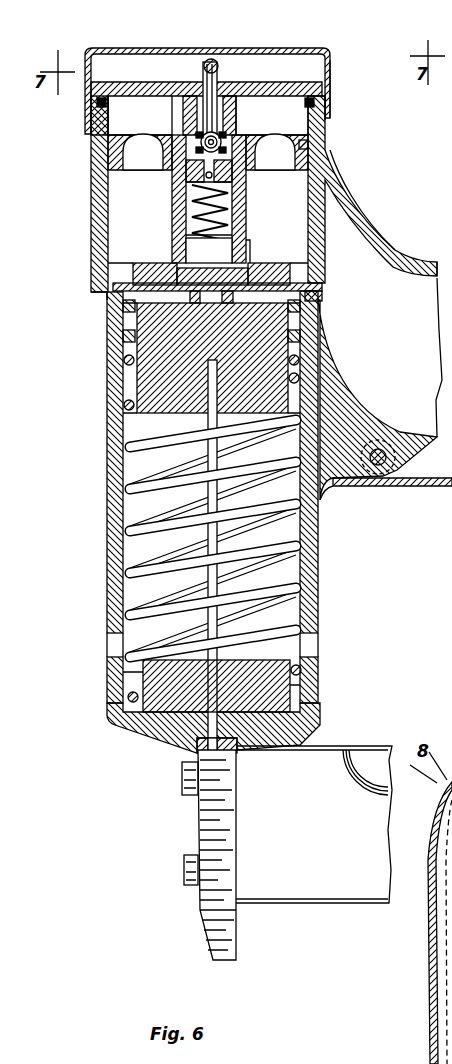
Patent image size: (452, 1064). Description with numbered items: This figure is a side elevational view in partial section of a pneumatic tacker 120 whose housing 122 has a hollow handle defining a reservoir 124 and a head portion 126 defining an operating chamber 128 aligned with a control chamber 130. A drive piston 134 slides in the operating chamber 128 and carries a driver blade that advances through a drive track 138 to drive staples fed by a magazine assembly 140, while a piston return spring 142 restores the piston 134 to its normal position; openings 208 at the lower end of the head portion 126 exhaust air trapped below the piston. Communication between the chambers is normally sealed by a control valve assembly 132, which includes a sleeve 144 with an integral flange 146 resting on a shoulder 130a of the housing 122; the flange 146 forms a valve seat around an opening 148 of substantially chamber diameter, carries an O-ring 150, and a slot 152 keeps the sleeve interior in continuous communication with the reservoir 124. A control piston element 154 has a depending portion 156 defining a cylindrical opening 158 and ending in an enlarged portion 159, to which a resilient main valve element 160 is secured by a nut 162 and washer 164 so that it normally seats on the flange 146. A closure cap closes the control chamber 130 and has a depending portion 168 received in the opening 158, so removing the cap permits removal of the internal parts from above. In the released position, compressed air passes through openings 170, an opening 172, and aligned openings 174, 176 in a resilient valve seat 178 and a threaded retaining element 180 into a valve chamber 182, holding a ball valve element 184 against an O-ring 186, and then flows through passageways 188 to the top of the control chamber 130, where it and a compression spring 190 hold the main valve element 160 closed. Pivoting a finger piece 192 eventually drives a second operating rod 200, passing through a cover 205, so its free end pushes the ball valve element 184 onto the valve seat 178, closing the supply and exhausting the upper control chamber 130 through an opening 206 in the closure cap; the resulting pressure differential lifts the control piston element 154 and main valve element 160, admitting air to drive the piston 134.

The pneumatic tacker 120 is at (382, 125).
The housing 122 is at (348, 200).
The reservoir 124 is at (400, 266).
The head portion 126 is at (318, 540).
The operating chamber 128 is at (124, 508).
The control chamber 130 is at (92, 210).
The shoulder 130a is at (100, 292).
The control valve assembly 132 is at (118, 190).
The drive piston 134 is at (140, 383).
The drive track 138 is at (202, 753).
The magazine assembly 140 is at (330, 746).
The piston return spring 142 is at (300, 604).
The sleeve 144 is at (95, 240).
The flange 146 is at (123, 306).
The opening 148 is at (123, 336).
The O-ring 150 is at (325, 303).
The slot 152 is at (322, 178).
The control piston element 154 is at (318, 122).
The depending portion 156 is at (172, 207).
The cylindrical opening 158 is at (238, 232).
The enlarged portion 159 is at (246, 250).
The main valve element 160 is at (285, 270).
The nut 162 is at (124, 358).
The washer 164 is at (320, 287).
The depending portion 168 is at (236, 108).
The openings 170 is at (186, 255).
The opening 172 is at (240, 196).
The opening 174 is at (186, 172).
The opening 176 is at (232, 172).
The resilient valve seat 178 is at (170, 165).
The retaining element 180 is at (187, 190).
The valve chamber 182 is at (248, 165).
The ball valve element 184 is at (216, 130).
The O-ring 186 is at (198, 130).
The passageways 188 is at (176, 118).
The compression spring 190 is at (232, 212).
The finger piece 192 is at (412, 486).
The second operating rod 200 is at (211, 58).
The cover 205 is at (330, 52).
The opening 206 is at (204, 62).
The openings 208 is at (318, 638).